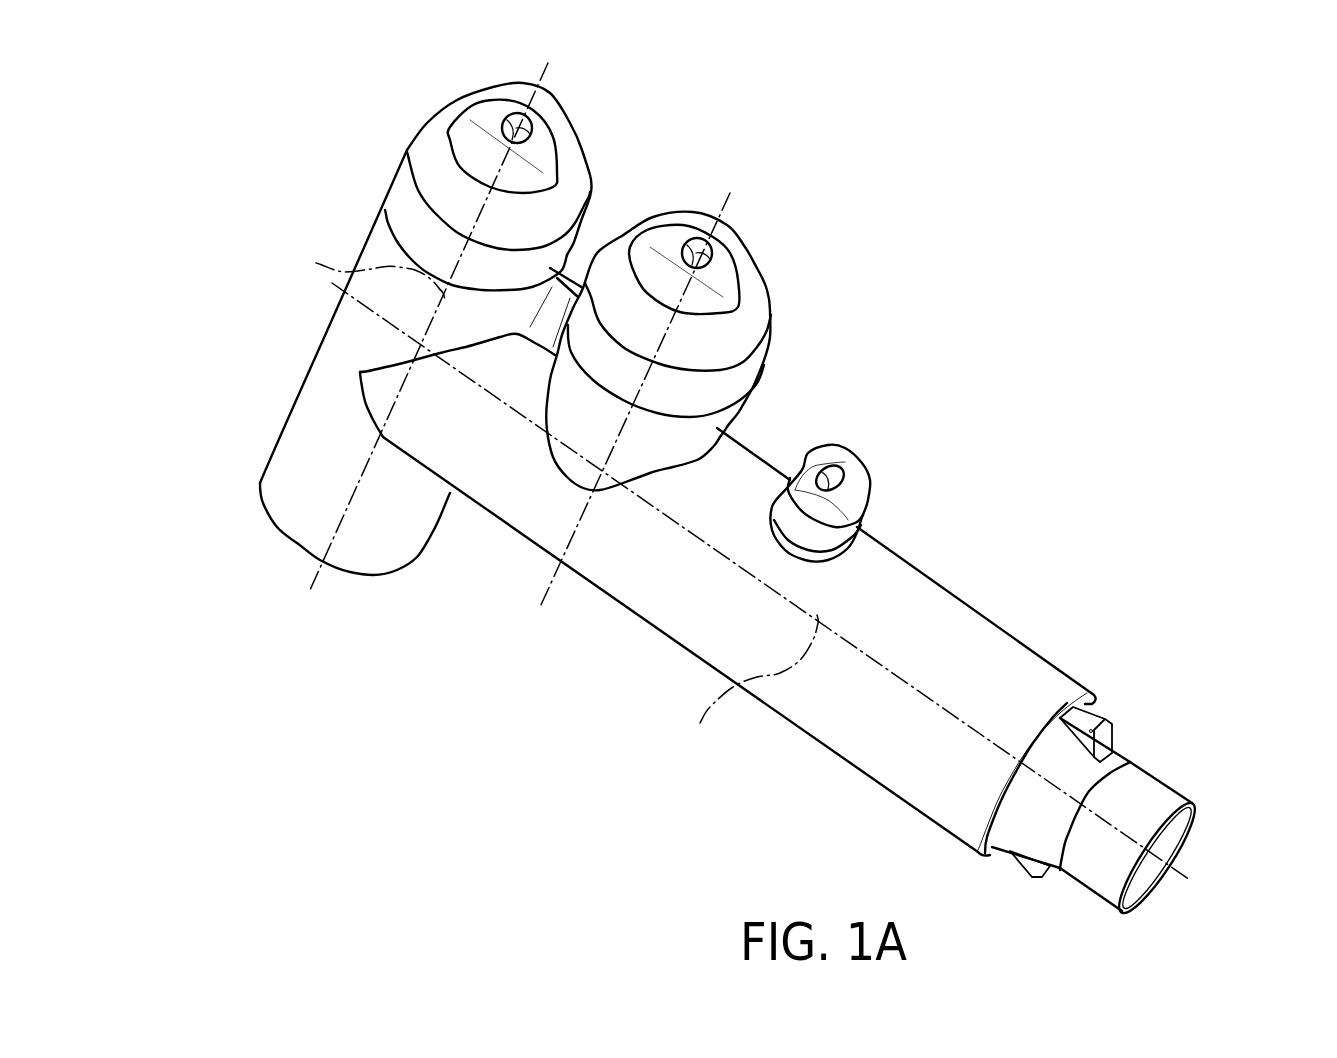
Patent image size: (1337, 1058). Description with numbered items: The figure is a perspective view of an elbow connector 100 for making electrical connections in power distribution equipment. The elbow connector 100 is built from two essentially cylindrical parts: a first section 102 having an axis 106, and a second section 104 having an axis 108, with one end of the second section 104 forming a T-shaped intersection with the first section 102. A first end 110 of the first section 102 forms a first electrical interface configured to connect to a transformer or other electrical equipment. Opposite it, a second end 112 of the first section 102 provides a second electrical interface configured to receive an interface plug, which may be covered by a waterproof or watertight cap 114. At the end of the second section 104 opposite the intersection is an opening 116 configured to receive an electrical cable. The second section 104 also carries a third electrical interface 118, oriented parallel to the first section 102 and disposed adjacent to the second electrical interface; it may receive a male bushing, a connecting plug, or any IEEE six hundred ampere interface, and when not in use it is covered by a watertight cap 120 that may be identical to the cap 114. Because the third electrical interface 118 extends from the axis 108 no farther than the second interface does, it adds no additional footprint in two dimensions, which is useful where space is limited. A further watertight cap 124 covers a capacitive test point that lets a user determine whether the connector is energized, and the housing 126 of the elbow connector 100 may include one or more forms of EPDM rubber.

The elbow connector 100 is at (1008, 167).
The first section 102 is at (206, 370).
The second section 104 is at (1023, 582).
The axis 106 is at (316, 263).
The axis 108 is at (748, 691).
The first end 110 is at (260, 577).
The second end 112 is at (349, 108).
The cap 114 is at (543, 222).
The opening 116 is at (1228, 876).
The third electrical interface 118 is at (663, 450).
The watertight cap 120 is at (730, 343).
The watertight cap 124 is at (850, 462).
The housing 126 is at (847, 750).